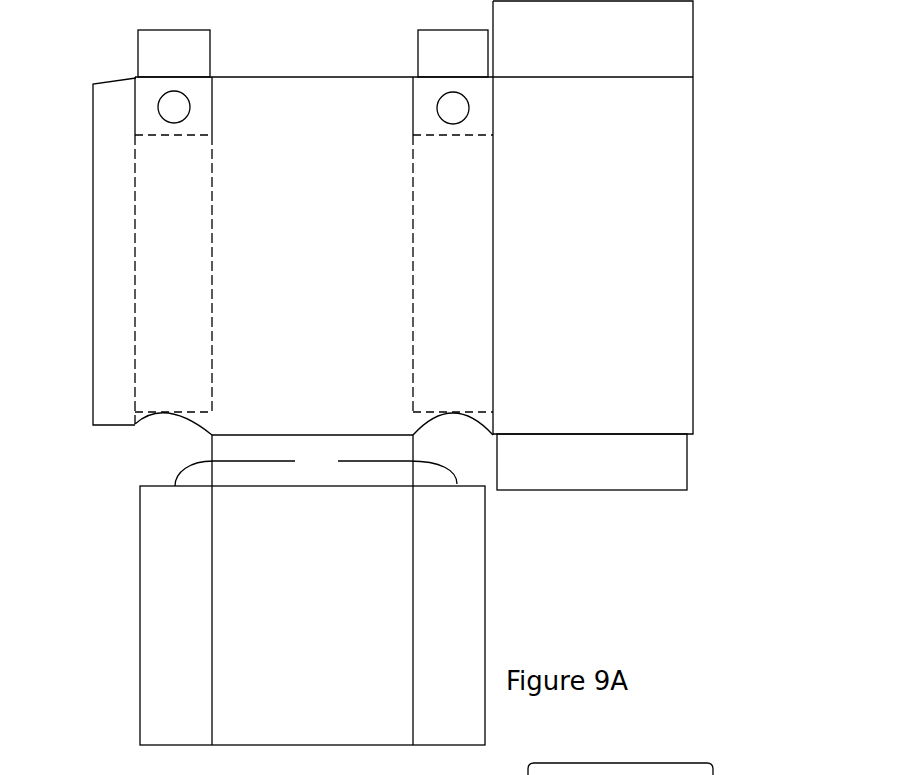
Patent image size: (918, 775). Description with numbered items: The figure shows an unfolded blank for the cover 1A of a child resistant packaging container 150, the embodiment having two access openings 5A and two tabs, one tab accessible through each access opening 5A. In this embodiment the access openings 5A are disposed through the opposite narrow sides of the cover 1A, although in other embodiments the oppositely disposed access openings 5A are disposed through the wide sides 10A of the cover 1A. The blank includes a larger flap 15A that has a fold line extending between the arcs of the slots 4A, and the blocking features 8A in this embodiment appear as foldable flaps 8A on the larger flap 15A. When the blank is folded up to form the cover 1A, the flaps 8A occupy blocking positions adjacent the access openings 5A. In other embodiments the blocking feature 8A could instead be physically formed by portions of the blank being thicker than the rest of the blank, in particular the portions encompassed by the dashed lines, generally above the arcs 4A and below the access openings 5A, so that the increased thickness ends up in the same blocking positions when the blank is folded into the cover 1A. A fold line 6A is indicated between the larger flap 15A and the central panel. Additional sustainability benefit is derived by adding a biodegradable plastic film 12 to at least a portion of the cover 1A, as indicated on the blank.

The child resistant packaging container 150 is at (514, 521).
The wide side 10A is at (331, 194).
The access opening 5A is at (162, 110).
The cover 1A is at (328, 369).
The biodegradable plastic film 12 is at (281, 252).
The slot 4A is at (160, 429).
The fold line 6A is at (316, 468).
The larger flap 15A is at (334, 616).
The blocking feature 8A is at (193, 618).